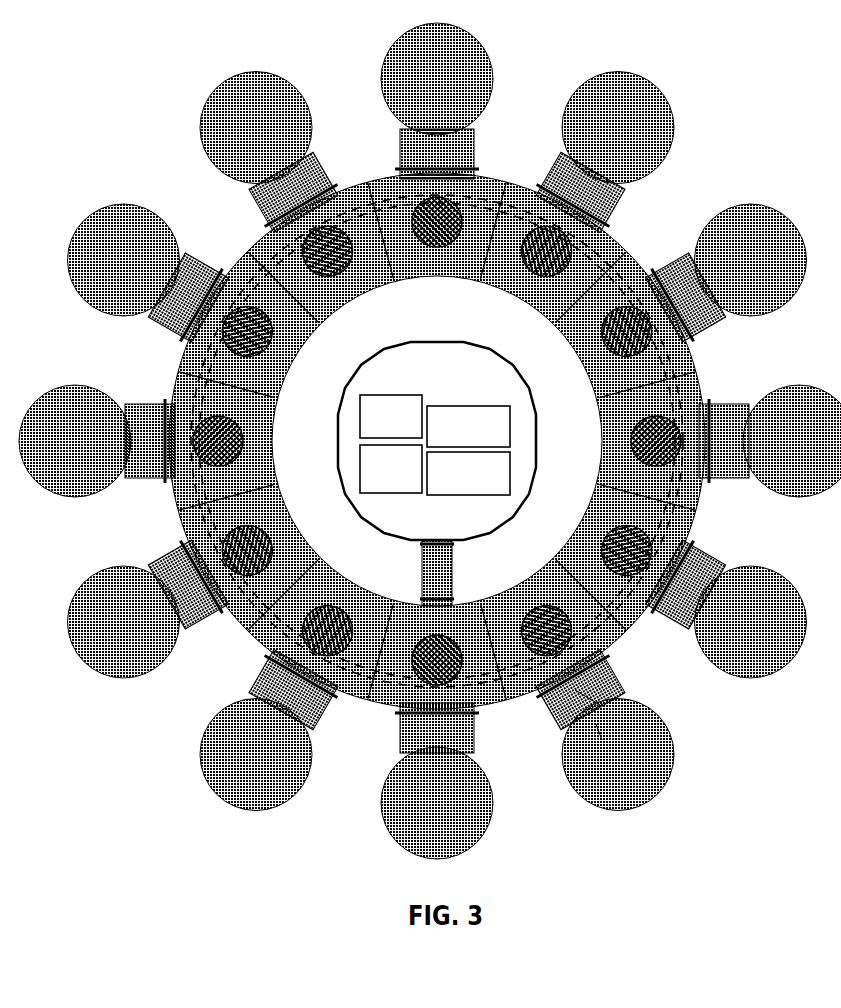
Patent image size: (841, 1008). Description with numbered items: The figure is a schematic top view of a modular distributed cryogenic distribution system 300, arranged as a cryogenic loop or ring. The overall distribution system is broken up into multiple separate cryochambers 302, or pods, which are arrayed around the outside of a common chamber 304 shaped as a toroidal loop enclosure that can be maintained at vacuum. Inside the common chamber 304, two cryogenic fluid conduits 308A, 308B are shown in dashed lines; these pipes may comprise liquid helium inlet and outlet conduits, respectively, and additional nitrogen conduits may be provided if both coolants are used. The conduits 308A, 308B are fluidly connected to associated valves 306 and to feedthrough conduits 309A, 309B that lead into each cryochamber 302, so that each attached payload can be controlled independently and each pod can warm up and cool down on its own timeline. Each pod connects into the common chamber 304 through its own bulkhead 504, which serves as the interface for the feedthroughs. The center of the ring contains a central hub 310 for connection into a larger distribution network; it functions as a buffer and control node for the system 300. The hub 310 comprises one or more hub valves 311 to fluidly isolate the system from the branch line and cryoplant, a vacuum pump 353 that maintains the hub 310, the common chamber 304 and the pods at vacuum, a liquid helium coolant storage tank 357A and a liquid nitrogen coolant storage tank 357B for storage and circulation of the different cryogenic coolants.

The modular distributed cryogenic distribution system 300 is at (755, 25).
The cryochamber 302 is at (662, 720).
The common chamber 304 is at (688, 520).
The valve 306 is at (652, 337).
The cryogenic fluid conduit 308A is at (480, 663).
The cryogenic fluid conduit 308B is at (355, 663).
The feedthrough conduit 309A is at (625, 727).
The feedthrough conduit 309B is at (594, 732).
The central hub 310 is at (454, 385).
The hub valve 311 is at (391, 416).
The vacuum pump 353 is at (391, 469).
The liquid helium coolant storage tank 357A is at (468, 426).
The liquid nitrogen coolant storage tank 357B is at (468, 473).
The bulkhead 504 is at (605, 203).